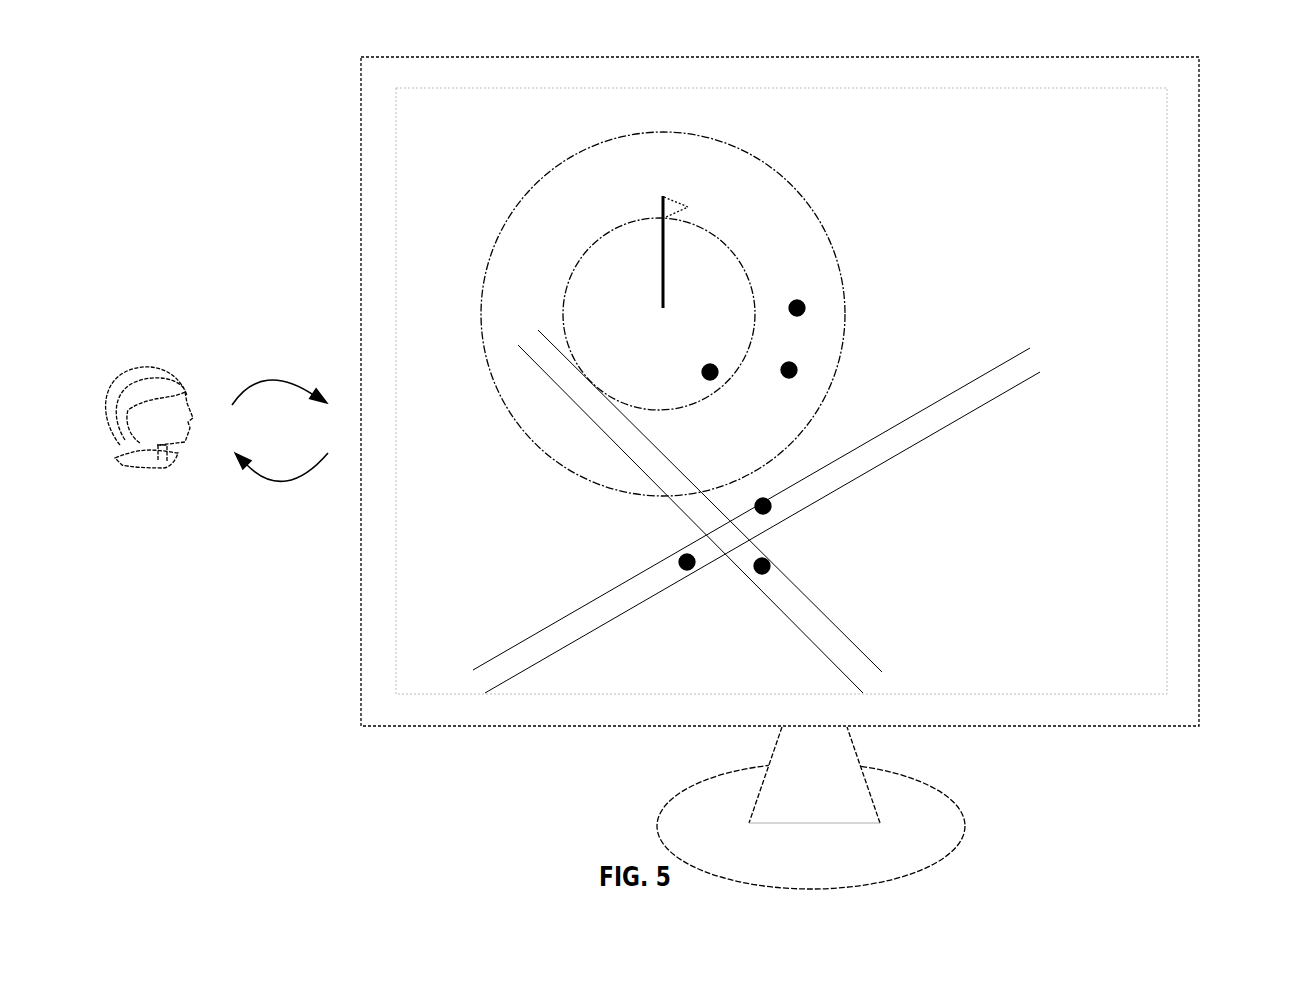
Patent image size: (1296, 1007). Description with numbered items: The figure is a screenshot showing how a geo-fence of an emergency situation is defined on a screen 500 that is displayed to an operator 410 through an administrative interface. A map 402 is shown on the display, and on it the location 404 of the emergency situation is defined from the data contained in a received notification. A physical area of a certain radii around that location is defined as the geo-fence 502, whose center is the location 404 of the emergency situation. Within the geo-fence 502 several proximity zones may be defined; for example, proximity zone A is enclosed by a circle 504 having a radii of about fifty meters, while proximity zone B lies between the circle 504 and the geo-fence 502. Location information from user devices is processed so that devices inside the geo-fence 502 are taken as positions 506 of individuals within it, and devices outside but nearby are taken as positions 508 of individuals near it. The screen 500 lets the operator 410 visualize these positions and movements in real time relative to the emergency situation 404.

The screen 500 is at (1270, 139).
The map 402 is at (799, 158).
The location of the emergency situation 404 is at (681, 376).
The operator 410 is at (103, 418).
The geo-fence 502 is at (835, 258).
The circle 504 is at (702, 227).
The positions of individuals inside the geo-fence 506 is at (805, 306).
The positions of individuals near the geo-fence 508 is at (771, 504).